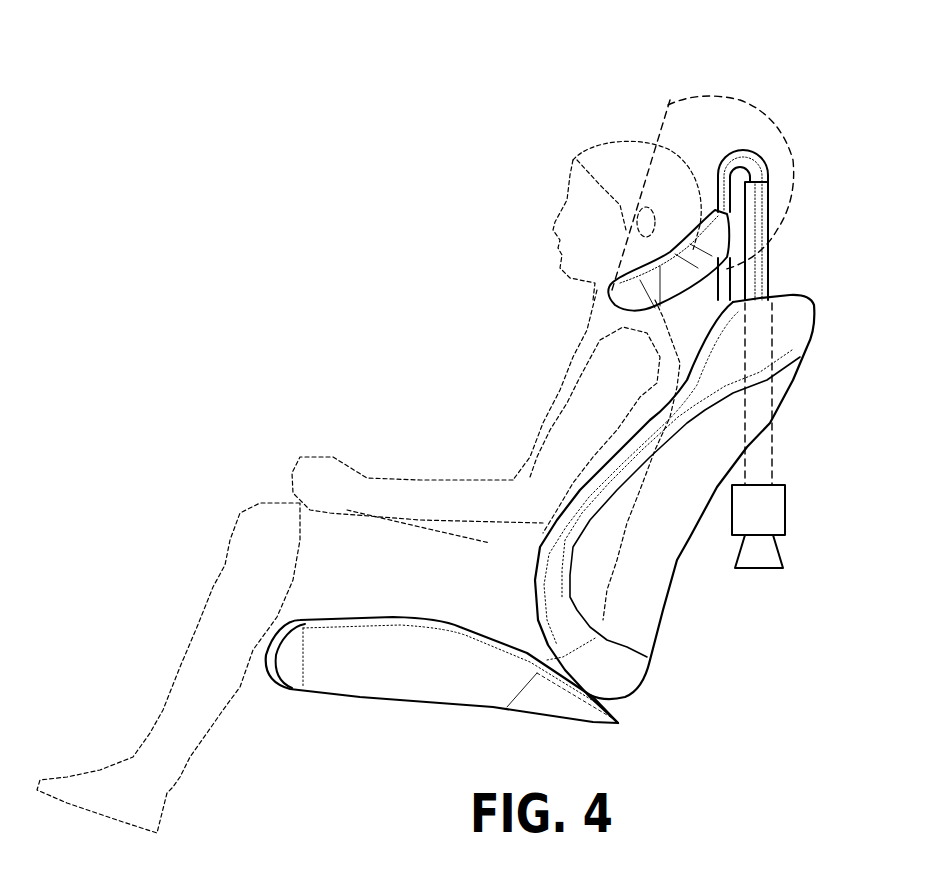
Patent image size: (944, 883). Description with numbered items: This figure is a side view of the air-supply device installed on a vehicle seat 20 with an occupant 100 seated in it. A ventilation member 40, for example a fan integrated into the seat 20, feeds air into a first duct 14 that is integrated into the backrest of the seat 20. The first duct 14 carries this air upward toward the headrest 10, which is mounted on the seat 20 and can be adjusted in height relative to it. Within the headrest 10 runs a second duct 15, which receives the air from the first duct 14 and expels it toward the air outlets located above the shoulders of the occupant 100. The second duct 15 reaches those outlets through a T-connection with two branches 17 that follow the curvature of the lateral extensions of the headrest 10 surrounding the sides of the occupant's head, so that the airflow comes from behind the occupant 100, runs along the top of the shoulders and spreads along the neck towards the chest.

The headrest 10 is at (703, 147).
The second duct 15 is at (763, 160).
The branches 17 is at (632, 299).
The first duct 14 is at (758, 455).
The ventilation member 40 is at (770, 510).
The seat 20 is at (637, 598).
The occupant 100 is at (600, 380).